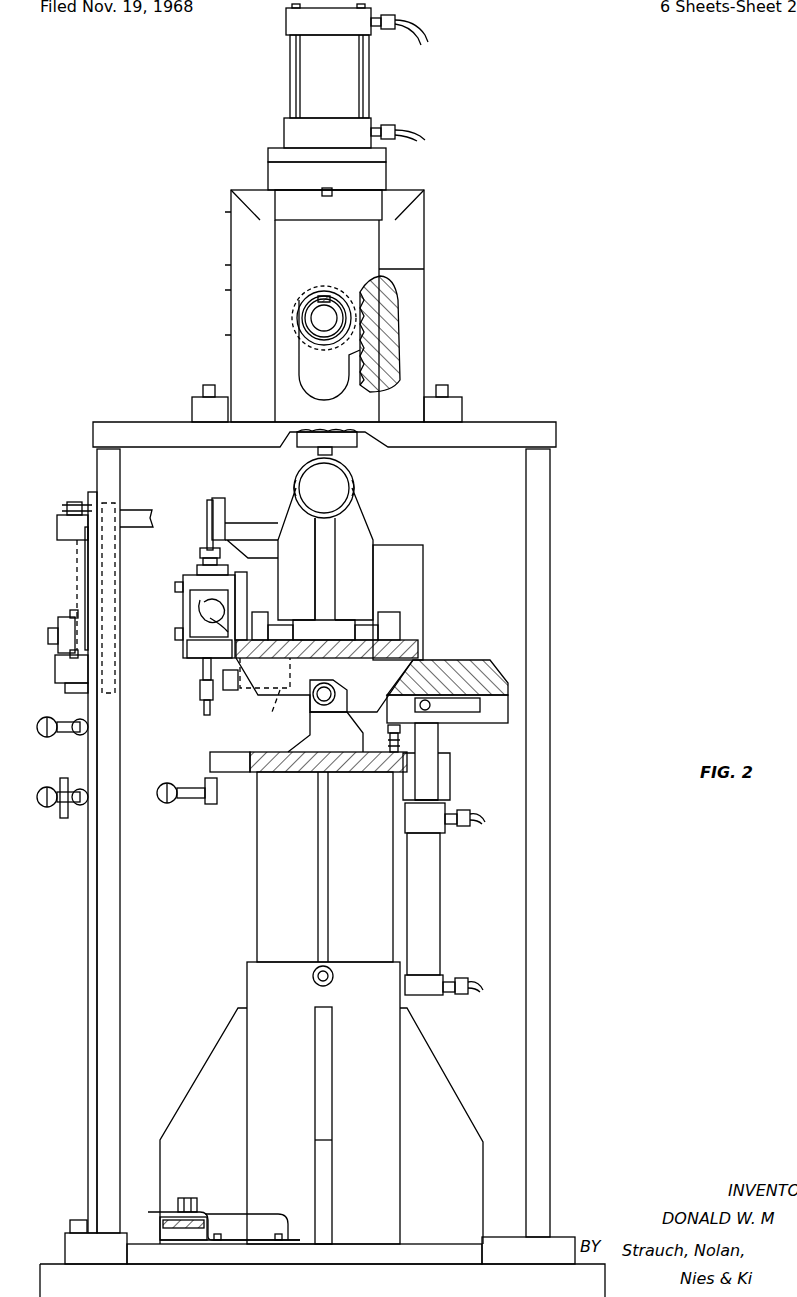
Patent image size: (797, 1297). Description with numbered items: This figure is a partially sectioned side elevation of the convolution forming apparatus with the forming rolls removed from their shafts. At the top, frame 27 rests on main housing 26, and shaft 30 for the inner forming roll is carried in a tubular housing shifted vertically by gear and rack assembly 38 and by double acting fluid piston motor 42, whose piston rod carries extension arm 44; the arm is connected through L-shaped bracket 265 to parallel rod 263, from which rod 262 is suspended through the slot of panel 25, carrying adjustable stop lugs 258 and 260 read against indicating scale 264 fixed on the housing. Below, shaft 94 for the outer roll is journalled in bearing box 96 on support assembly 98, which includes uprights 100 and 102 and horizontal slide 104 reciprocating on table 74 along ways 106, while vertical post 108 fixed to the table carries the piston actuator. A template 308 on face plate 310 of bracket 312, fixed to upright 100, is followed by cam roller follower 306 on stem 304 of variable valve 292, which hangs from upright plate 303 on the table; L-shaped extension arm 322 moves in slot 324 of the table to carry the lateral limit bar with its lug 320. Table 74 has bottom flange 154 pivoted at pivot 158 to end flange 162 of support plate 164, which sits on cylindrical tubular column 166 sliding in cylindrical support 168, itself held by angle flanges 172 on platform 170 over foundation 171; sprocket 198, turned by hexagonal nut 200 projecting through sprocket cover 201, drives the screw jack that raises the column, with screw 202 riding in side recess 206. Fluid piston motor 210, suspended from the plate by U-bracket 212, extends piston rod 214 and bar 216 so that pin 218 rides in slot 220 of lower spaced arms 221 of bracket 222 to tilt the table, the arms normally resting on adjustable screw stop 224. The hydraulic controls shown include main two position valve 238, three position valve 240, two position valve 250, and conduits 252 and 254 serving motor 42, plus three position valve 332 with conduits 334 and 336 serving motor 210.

The panel 25 is at (88, 870).
The main housing 26 is at (545, 583).
The frame 27 is at (415, 300).
The shaft 30 is at (318, 322).
The gear and rack assembly 38 is at (350, 370).
The double acting fluid piston motor 42 is at (341, 78).
The extension arm 44 is at (345, 440).
The table 74 is at (347, 657).
The shaft 94 is at (336, 498).
The bearing box 96 is at (352, 480).
The support assembly 98 is at (399, 514).
The upright 100 is at (335, 560).
The upright 102 is at (310, 563).
The horizontal slide 104 is at (343, 640).
The ways 106 is at (258, 617).
The vertical post 108 is at (408, 555).
The bottom flange 154 is at (385, 681).
The pivot 158 is at (347, 694).
The end flange 162 is at (344, 733).
The support plate 164 is at (310, 772).
The cylindrical tubular column 166 is at (298, 865).
The cylindrical support 168 is at (375, 1082).
The platform 170 is at (378, 1252).
The foundation 171 is at (458, 1291).
The angle flanges 172 is at (224, 1121).
The sprocket 198 is at (190, 1228).
The hexagonal nut 200 is at (190, 1196).
The sprocket cover 201 is at (268, 1208).
The screw 202 is at (332, 982).
The column side recess 206 is at (328, 915).
The fluid piston motor 210 is at (432, 936).
The U-bracket 212 is at (450, 785).
The piston rod 214 is at (440, 798).
The bar 216 is at (432, 767).
The pin 218 is at (452, 672).
The slot 220 is at (470, 706).
The lower spaced arms 221 is at (495, 718).
The bracket 222 is at (505, 690).
The adjustable screw stop 224 is at (388, 742).
The main two position valve 238 is at (40, 806).
The three position valve 240 is at (58, 628).
The two position valve 250 is at (40, 735).
The conduit 252 is at (430, 36).
The conduit 254 is at (425, 138).
The stop lug 258 is at (57, 528).
The stop lug 260 is at (55, 665).
The rod 262 is at (75, 500).
The parallel rod 263 is at (115, 607).
The indicating scale 264 is at (75, 568).
The L-shaped bracket 265 is at (322, 452).
The variable valve 292 is at (197, 658).
The upright plate 303 is at (245, 590).
The stem 304 is at (196, 570).
The cam roller follower 306 is at (200, 553).
The template 308 is at (207, 527).
The face plate 310 is at (225, 505).
The bracket 312 is at (250, 535).
The lug 320 is at (230, 690).
The L-shaped extension arm 322 is at (282, 702).
The slot 324 is at (265, 673).
The three position valve 332 is at (235, 805).
The conduit 334 is at (466, 996).
The conduit 336 is at (455, 826).